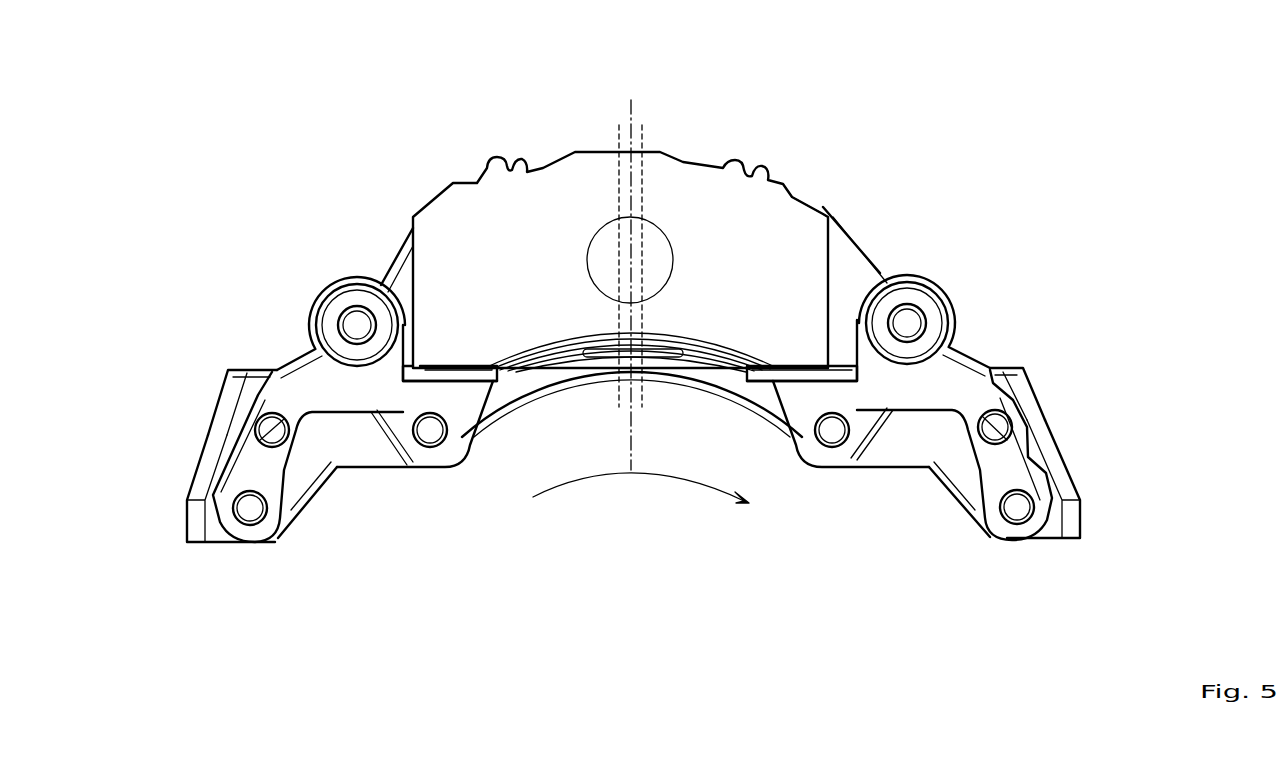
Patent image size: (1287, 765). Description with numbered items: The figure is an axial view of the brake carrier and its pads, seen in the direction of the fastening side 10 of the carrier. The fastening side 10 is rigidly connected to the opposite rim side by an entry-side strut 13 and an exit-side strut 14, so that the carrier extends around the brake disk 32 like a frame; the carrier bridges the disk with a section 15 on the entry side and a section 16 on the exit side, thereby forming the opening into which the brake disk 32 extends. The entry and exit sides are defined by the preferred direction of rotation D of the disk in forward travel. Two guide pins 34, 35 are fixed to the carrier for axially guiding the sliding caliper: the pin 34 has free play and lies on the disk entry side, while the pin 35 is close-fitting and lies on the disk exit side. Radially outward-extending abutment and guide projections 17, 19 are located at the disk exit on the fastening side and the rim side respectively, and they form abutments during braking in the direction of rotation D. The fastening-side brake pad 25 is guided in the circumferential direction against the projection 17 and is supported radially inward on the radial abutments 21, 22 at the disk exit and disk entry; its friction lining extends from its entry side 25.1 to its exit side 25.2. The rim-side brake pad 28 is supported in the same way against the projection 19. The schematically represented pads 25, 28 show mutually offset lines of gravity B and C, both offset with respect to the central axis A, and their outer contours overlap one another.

The fastening side 10 is at (632, 374).
The entry-side strut 13 is at (204, 468).
The exit-side strut 14 is at (1073, 458).
The entry-side bridging section 15 is at (210, 418).
The exit-side bridging section 16 is at (1052, 402).
The abutment and guide projection 17 is at (830, 283).
The abutment and guide projection 19 is at (837, 203).
The radial abutment 21 is at (785, 372).
The radial abutment 22 is at (457, 370).
The fastening-side brake pad 25 is at (674, 347).
The entry side of brake pad 25.1 is at (420, 370).
The exit side of brake pad 25.2 is at (822, 372).
The rim-side brake pad 28 is at (798, 190).
The brake disk 32 is at (530, 423).
The guide pin 34 is at (353, 320).
The guide pin 35 is at (907, 323).
The central axis A is at (630, 420).
The line of gravity B is at (620, 393).
The line of gravity C is at (642, 138).
The direction of rotation D is at (650, 488).